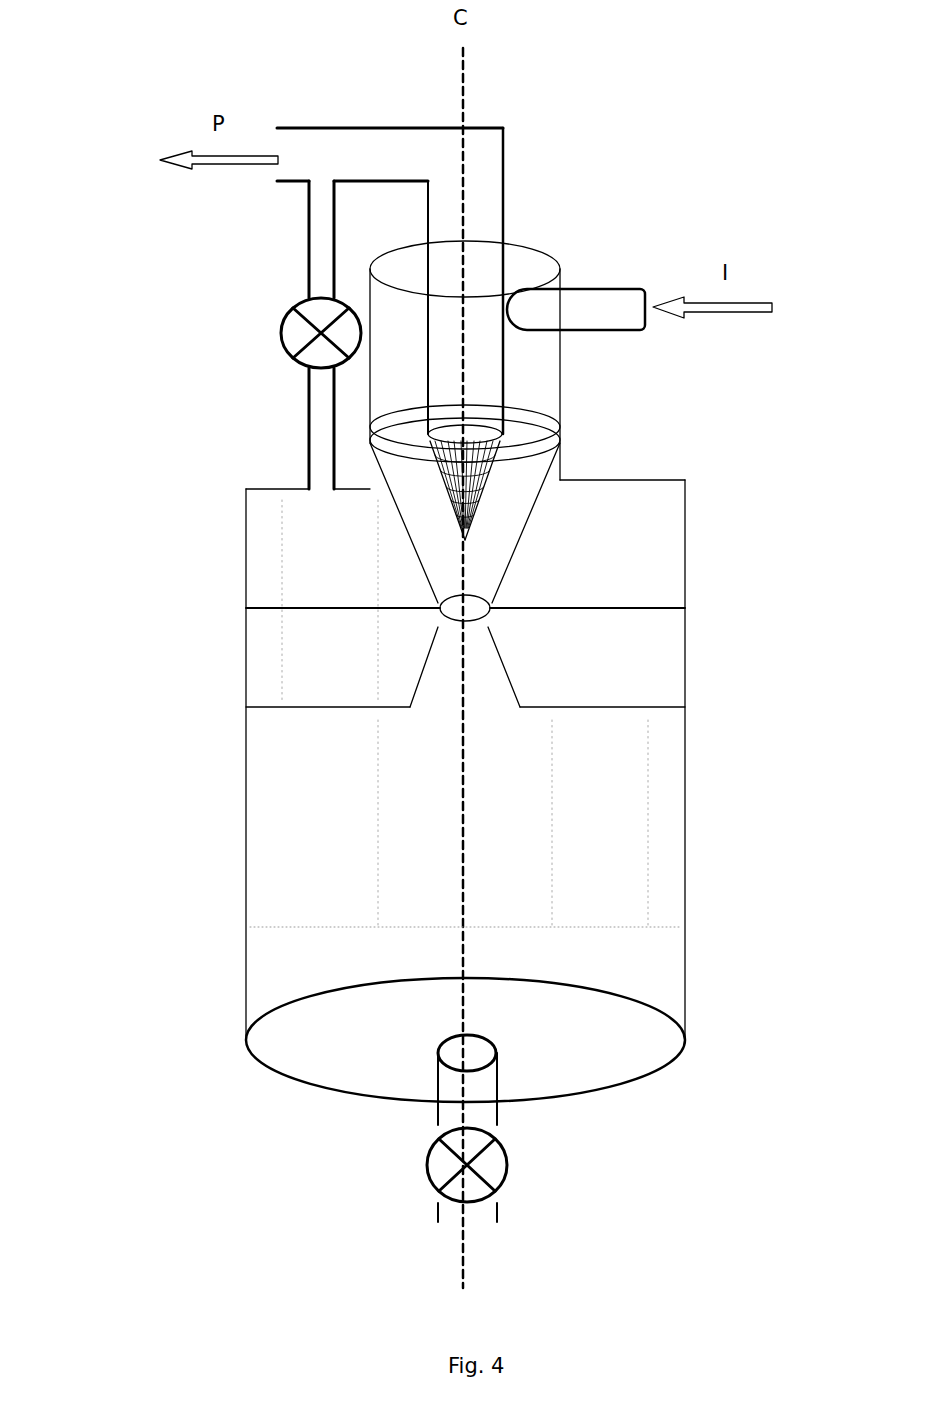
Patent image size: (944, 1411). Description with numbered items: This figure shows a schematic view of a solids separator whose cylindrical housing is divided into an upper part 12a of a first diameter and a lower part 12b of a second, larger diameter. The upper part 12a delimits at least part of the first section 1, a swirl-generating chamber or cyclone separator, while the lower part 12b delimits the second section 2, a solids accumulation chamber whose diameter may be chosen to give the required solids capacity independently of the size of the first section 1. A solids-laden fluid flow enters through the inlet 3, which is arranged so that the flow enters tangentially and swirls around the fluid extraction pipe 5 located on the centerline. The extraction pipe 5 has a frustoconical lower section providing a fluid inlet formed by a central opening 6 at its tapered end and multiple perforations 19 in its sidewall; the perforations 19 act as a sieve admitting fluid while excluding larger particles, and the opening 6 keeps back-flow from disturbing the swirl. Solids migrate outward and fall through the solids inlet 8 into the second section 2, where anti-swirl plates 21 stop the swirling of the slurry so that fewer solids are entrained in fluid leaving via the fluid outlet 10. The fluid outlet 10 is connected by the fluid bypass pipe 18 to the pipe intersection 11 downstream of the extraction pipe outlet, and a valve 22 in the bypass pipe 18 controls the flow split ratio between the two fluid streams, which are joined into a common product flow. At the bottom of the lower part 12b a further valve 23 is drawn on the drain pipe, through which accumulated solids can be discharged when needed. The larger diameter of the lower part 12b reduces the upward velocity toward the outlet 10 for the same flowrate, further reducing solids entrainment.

The first section 1 is at (400, 388).
The second section 2 is at (348, 862).
The inlet 3 is at (615, 310).
The fluid extraction pipe 5 is at (498, 404).
The opening 6 is at (467, 540).
The solids inlet 8 is at (465, 630).
The fluid outlet 10 is at (318, 489).
The pipe intersection 11 is at (318, 167).
The upper part 12a is at (560, 378).
The lower part 12b is at (685, 760).
The fluid bypass pipe 18 is at (310, 258).
The perforations 19 is at (458, 487).
The anti-swirl plates 21 is at (357, 677).
The valve 22 is at (280, 332).
The drain valve 23 is at (430, 1165).